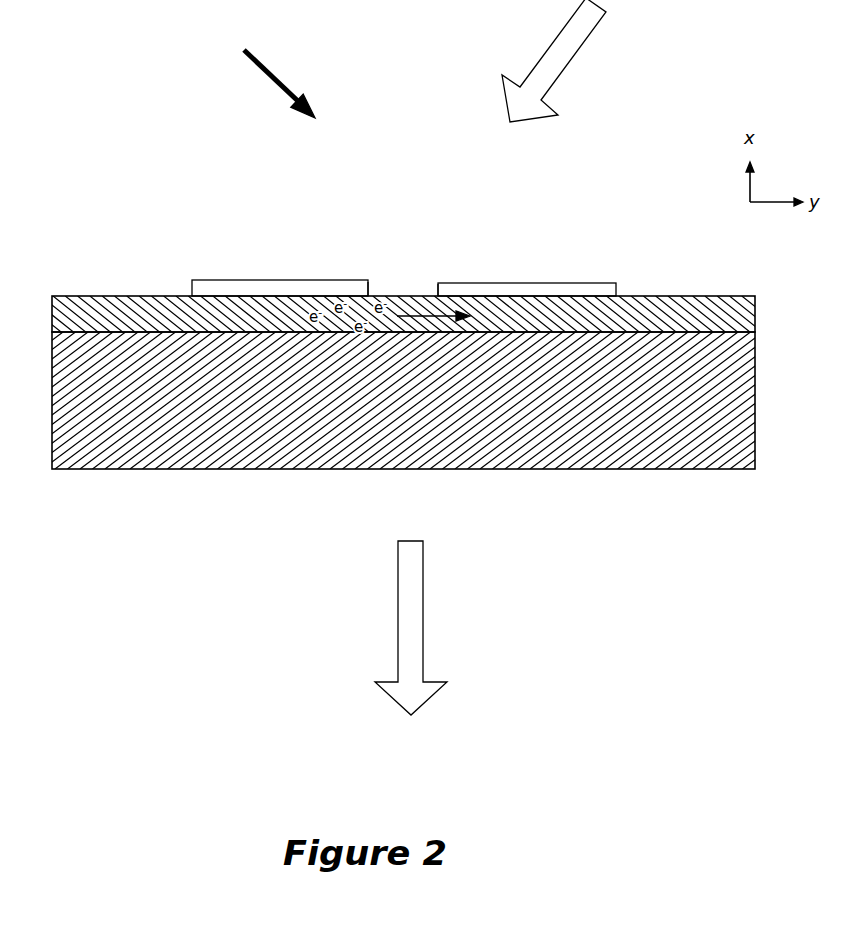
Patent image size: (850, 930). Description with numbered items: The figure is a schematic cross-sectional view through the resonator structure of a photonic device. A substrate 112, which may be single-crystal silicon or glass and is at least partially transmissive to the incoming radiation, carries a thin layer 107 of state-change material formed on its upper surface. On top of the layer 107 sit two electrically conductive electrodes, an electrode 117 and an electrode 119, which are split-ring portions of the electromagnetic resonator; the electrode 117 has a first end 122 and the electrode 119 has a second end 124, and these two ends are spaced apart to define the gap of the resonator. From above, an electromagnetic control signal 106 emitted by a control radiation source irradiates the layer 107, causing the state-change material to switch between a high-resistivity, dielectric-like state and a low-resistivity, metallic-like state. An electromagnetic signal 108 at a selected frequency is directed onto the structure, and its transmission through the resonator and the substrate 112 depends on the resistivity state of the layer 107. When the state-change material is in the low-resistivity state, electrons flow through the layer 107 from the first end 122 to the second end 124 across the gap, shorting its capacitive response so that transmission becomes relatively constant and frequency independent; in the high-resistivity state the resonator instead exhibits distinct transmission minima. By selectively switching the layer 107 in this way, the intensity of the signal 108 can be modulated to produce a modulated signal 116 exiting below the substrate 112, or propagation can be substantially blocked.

The electromagnetic control signal 106 is at (263, 63).
The electromagnetic signal 108 is at (575, 38).
The layer of state-change material 107 is at (740, 318).
The substrate 112 is at (742, 413).
The modulated signal 116 is at (415, 613).
The electrode 117 is at (517, 288).
The electrode 119 is at (252, 283).
The first end 122 is at (437, 296).
The second end 124 is at (368, 285).